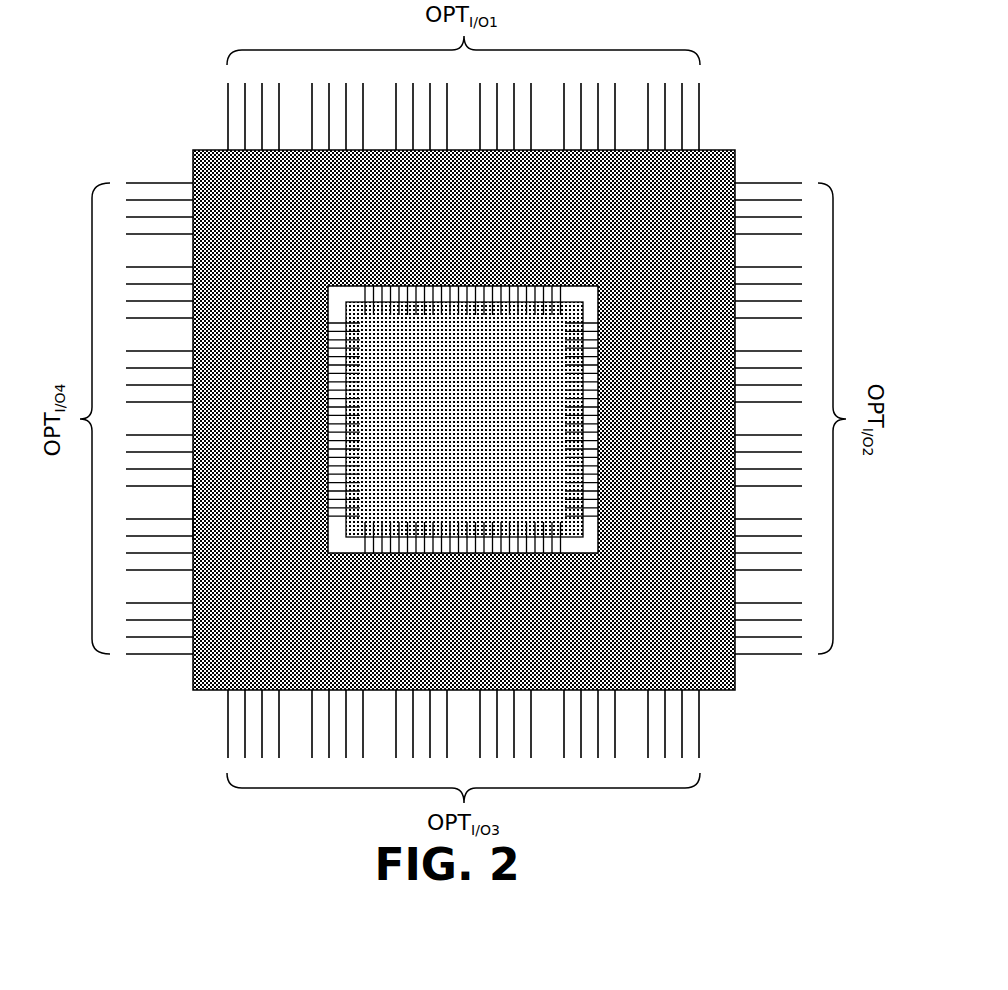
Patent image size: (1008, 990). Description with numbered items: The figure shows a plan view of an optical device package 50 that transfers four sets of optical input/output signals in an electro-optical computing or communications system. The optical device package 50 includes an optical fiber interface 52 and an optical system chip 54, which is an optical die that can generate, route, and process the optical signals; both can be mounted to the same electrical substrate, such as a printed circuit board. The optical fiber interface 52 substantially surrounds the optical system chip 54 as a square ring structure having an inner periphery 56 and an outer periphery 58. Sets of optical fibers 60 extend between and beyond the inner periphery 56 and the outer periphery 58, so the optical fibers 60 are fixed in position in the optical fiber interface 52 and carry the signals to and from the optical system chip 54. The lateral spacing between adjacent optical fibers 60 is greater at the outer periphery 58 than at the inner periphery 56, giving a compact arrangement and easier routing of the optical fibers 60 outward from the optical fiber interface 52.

The optical device package 50 is at (433, 382).
The optical fiber interface 52 is at (409, 219).
The optical system chip 54 is at (479, 429).
The inner periphery 56 is at (328, 300).
The outer periphery 58 is at (197, 505).
The optical fibers 60 is at (155, 148).